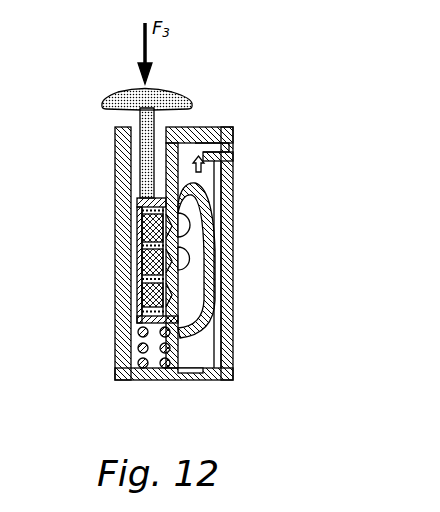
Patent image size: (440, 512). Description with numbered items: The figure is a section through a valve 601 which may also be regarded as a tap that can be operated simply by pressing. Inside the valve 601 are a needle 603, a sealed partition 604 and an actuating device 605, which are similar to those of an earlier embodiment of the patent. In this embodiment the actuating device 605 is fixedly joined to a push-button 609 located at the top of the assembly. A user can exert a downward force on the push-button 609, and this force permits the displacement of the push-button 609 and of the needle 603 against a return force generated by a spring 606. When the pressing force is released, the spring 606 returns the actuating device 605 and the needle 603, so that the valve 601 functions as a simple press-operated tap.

The valve 601 is at (240, 208).
The needle 603 is at (212, 280).
The sealed partition 604 is at (173, 371).
The actuating device 605 is at (137, 290).
The spring 606 is at (148, 381).
The push-button 609 is at (181, 93).